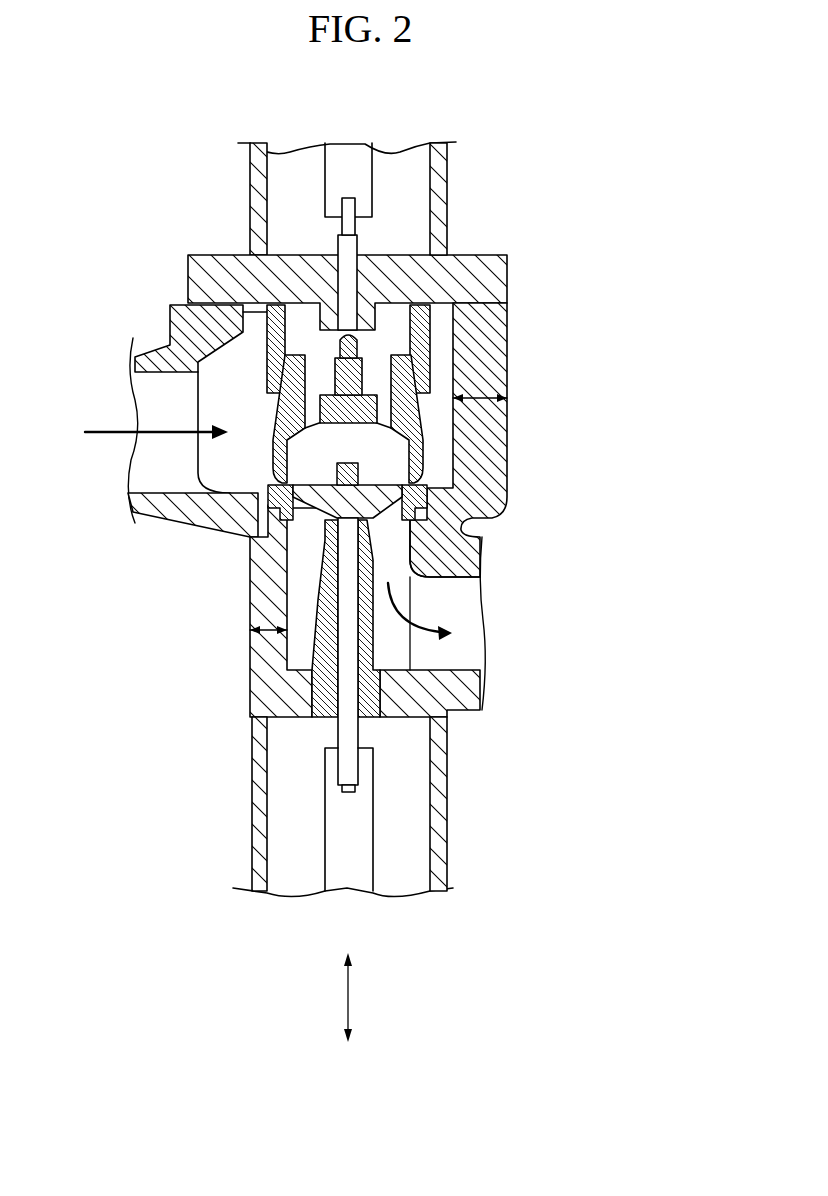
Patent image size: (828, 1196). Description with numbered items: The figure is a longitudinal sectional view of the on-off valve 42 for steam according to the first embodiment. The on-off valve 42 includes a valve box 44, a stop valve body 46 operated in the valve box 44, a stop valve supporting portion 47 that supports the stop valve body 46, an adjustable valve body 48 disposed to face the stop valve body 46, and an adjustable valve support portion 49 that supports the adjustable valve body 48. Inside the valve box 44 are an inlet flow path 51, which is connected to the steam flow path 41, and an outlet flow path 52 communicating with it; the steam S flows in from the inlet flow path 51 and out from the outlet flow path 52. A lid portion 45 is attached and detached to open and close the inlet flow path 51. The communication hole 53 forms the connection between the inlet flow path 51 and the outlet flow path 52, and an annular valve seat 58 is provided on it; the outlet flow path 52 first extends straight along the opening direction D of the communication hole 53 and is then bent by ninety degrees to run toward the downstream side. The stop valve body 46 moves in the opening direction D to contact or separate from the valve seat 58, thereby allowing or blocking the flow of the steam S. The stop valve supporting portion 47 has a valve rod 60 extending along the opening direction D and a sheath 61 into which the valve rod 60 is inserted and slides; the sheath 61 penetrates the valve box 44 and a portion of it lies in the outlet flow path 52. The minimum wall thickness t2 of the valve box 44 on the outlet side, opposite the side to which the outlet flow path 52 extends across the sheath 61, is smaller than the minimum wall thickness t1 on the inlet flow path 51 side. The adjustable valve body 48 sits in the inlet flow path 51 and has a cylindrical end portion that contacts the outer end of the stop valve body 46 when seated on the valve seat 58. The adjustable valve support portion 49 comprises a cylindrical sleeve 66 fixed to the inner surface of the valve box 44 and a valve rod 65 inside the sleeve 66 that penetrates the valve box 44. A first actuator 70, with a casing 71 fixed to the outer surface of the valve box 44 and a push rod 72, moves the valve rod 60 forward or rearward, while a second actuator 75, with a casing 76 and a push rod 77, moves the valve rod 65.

The on-off valve 42 is at (583, 272).
The steam flow path 41 is at (168, 513).
The valve box 44 is at (257, 677).
The lid portion 45 is at (410, 263).
The stop valve body 46 is at (405, 567).
The stop valve supporting portion 47 is at (570, 730).
The adjustable valve body 48 is at (420, 453).
The adjustable valve support portion 49 is at (548, 125).
The inlet flow path 51 is at (181, 415).
The outlet flow path 52 is at (470, 666).
The communication hole 53 is at (215, 500).
The annular valve seat 58 is at (462, 530).
The valve rod 60 is at (358, 770).
The sheath 61 is at (380, 708).
The valve rod 65 is at (348, 210).
The cylindrical sleeve 66 is at (450, 172).
The first actuator 70 is at (152, 770).
The casing 71 is at (250, 802).
The push rod 72 is at (345, 833).
The second actuator 75 is at (160, 140).
The casing 76 is at (258, 193).
The push rod 77 is at (333, 162).
The minimum wall thickness t1 is at (485, 398).
The minimum wall thickness t2 is at (268, 637).
The steam S is at (105, 433).
The opening direction D is at (352, 997).